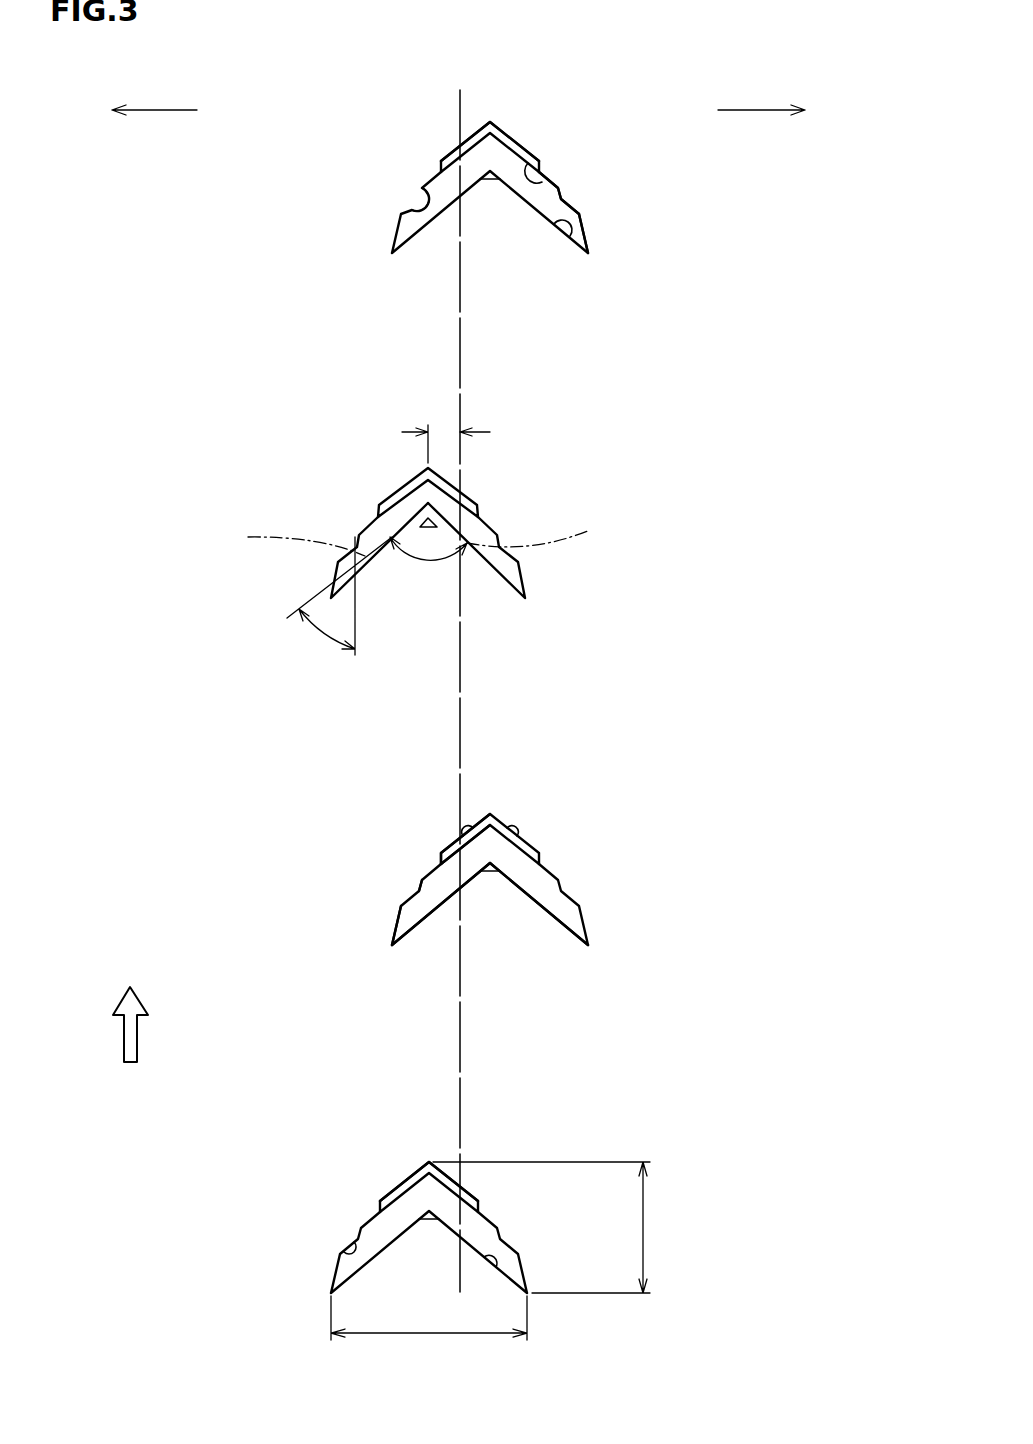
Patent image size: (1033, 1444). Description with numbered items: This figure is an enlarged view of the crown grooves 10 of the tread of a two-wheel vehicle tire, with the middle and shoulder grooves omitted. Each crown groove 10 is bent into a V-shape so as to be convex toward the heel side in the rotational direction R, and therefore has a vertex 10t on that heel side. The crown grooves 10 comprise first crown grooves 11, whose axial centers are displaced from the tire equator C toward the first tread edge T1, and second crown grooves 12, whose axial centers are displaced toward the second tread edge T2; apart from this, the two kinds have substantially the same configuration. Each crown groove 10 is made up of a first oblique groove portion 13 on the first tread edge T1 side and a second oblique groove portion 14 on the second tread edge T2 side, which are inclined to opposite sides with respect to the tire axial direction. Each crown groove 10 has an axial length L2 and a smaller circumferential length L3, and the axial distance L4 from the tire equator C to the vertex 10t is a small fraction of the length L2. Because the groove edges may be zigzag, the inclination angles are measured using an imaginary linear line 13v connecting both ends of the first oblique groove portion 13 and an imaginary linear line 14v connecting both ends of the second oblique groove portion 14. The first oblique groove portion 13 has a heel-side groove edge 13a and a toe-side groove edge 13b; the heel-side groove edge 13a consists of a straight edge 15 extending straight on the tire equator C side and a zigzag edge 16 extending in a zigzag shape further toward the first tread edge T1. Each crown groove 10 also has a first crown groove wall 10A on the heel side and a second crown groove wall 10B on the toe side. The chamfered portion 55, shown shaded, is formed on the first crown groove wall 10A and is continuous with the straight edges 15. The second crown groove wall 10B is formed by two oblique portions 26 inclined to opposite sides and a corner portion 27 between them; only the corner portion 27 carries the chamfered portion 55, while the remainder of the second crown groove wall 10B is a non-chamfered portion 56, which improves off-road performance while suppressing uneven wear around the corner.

The crown groove 10 is at (423, 707).
The first crown groove wall 10A is at (550, 187).
The second crown groove wall 10B is at (572, 237).
The vertex 10t is at (425, 465).
The first crown groove 11 is at (259, 406).
The second crown groove 12 is at (367, 219).
The first oblique groove portion 13 is at (370, 533).
The heel-side groove edge 13a is at (262, 778).
The toe-side groove edge 13b is at (398, 927).
The imaginary linear line 13v is at (279, 537).
The second oblique groove portion 14 is at (485, 530).
The imaginary linear line 14v is at (554, 530).
The straight edge 15 is at (466, 834).
The zigzag edge 16 is at (423, 888).
The oblique portion 26 is at (458, 197).
The corner portion 27 is at (496, 158).
The chamfered portion 55 is at (520, 150).
The non-chamfered portion 56 is at (430, 187).
The tire equator C is at (458, 675).
The first tread edge T1 is at (136, 110).
The second tread edge T2 is at (784, 110).
The rotational direction R is at (130, 1009).
The length in the tire axial direction L2 is at (429, 1333).
The length in the tire circumferential direction L3 is at (558, 1227).
The distance in the tire axial direction L4 is at (446, 430).